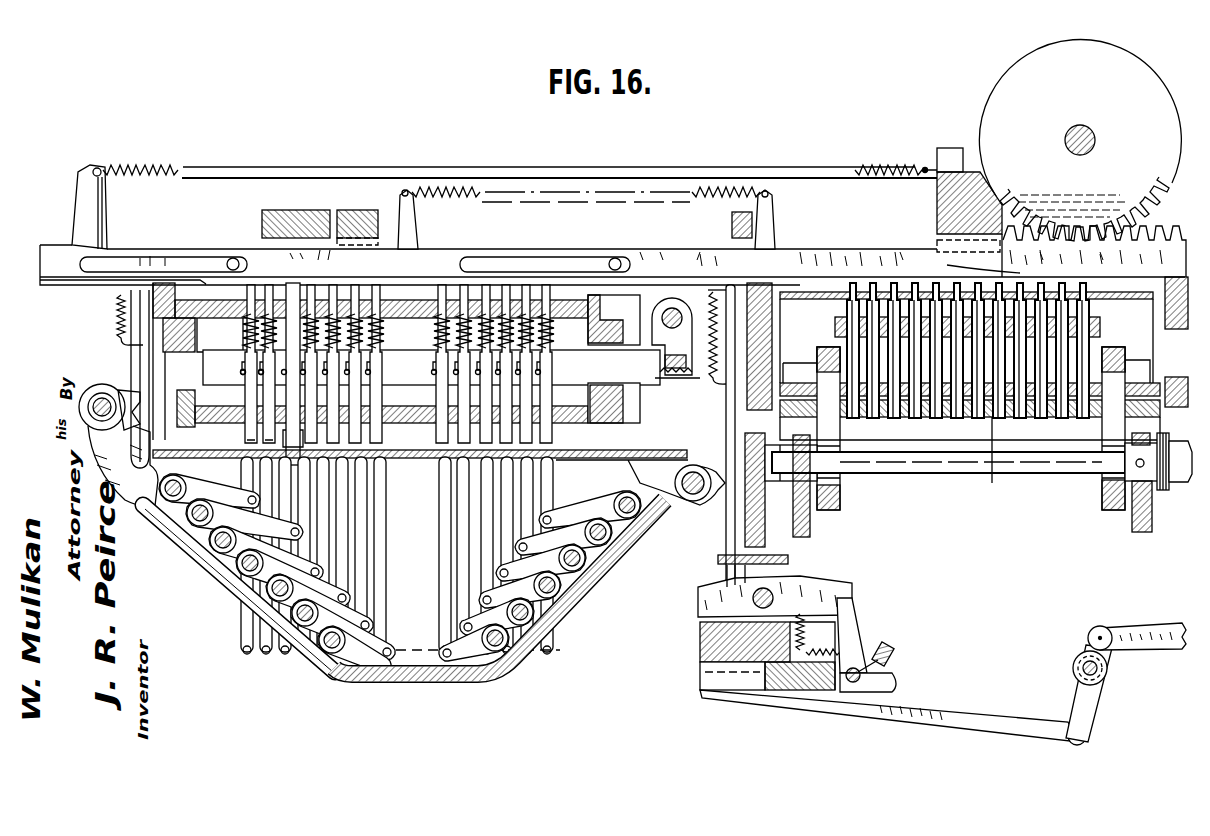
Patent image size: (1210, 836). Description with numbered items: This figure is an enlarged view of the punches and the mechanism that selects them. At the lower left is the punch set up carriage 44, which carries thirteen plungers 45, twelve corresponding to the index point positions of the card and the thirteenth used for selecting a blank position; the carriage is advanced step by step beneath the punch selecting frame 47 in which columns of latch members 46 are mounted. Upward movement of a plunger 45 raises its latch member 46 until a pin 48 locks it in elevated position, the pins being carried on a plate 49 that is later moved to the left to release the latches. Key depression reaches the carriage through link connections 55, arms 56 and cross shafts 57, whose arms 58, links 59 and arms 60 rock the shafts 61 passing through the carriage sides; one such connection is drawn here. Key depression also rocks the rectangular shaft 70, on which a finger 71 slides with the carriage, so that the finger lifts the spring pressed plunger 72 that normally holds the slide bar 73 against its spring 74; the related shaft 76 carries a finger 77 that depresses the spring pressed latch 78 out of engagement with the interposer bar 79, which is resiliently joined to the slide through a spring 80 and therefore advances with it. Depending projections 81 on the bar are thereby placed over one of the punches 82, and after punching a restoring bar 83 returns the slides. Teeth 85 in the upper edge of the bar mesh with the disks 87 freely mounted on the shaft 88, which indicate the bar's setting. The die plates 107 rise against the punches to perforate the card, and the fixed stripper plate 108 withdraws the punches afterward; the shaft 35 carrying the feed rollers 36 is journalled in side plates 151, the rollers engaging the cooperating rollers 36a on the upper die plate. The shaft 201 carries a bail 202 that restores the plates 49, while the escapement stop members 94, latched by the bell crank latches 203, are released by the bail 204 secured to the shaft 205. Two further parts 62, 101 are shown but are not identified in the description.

The shaft 35 is at (1040, 472).
The feed rollers 36 is at (840, 505).
The cooperating rollers 36a is at (824, 358).
The punch set up carriage 44 is at (440, 683).
The plungers 45 is at (483, 512).
The latch members 46 is at (300, 425).
The punch selecting frame 47 is at (562, 414).
The pin 48 is at (286, 372).
The plate 49 is at (407, 360).
The link connections 55 is at (1138, 632).
The arms 56 is at (1092, 647).
The cross shafts 57 is at (1108, 669).
The arms 58 is at (1095, 705).
The links 59 is at (882, 713).
The arms 60 is at (213, 581).
The shafts 61 is at (301, 628).
The bell crank links 62 is at (193, 530).
The shaft 70 is at (96, 420).
The finger 71 is at (118, 402).
The spring pressed plunger 72 is at (143, 344).
The slide bar 73 is at (77, 216).
The spring 74 is at (132, 171).
The shaft 76 is at (697, 493).
The finger 77 is at (700, 470).
The spring pressed latch 78 is at (726, 416).
The interposer bar 79 is at (690, 250).
The spring 80 is at (470, 197).
The projections 81 is at (888, 283).
The punches 82 is at (937, 415).
The restoring bar 83 is at (298, 226).
The teeth 85 is at (1148, 233).
The disks 87 is at (1132, 66).
The shaft 88 is at (1090, 136).
The escapement stop members 94 is at (815, 588).
The pivot 101 is at (752, 598).
The die plates 107 is at (985, 460).
The stripper plate 108 is at (1095, 331).
The side plates 151 is at (812, 532).
The shaft 201 is at (672, 316).
The bail 202 is at (678, 370).
The bell crank latches 203 is at (845, 614).
The bail 204 is at (890, 656).
The shaft 205 is at (862, 673).